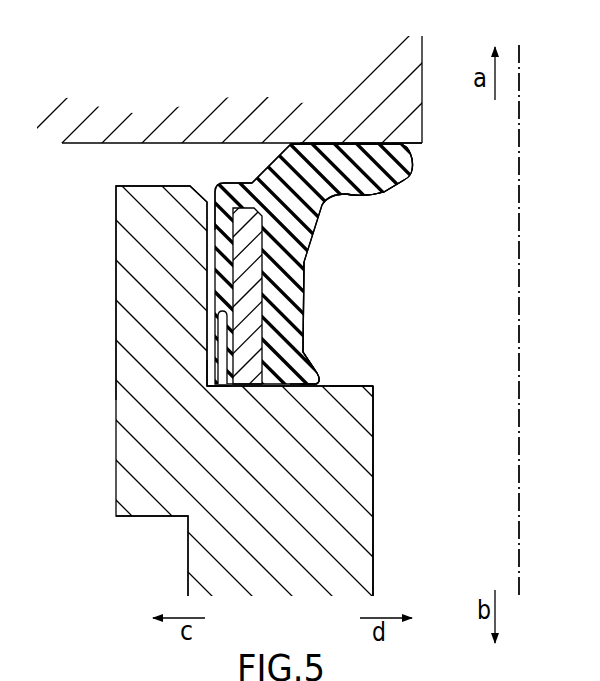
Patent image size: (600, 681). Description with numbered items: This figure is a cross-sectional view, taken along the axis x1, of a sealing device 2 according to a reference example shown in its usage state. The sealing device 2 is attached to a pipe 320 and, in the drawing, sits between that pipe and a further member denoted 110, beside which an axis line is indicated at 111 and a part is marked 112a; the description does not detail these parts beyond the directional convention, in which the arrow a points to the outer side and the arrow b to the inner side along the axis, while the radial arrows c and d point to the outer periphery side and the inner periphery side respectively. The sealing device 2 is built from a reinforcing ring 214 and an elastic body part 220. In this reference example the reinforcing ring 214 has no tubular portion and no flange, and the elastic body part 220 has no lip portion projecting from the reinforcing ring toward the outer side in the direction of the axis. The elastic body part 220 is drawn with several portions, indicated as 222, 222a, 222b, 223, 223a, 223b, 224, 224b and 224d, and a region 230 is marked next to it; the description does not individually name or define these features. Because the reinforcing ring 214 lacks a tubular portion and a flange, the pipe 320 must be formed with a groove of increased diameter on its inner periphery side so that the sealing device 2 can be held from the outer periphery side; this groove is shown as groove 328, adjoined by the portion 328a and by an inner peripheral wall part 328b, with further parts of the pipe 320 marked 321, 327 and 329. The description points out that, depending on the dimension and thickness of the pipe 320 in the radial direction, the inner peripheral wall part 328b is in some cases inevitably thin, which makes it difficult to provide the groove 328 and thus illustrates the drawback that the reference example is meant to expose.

The sealing device 2 is at (501, 212).
The first member (housing) 110 is at (437, 84).
The rotation axis 111 is at (532, 124).
The end surface of first member 112a is at (402, 152).
The reinforcing ring 214 is at (240, 289).
The elastic body part 220 is at (501, 367).
The lip portion 222 is at (410, 205).
The first surface of lip portion 222a is at (392, 170).
The second surface of lip portion 222b is at (316, 194).
The foot portion 223 is at (400, 322).
The bottom surface of foot portion 223a is at (321, 378).
The inclined surface of foot portion 223b is at (307, 360).
The seal body 224 is at (208, 253).
The outer peripheral surface of seal body 224b is at (303, 263).
The top surface of seal body 224d is at (212, 228).
The space 230 is at (484, 289).
The pipe 320 is at (390, 561).
The outer peripheral surface of second member 321 is at (458, 461).
The step surface 327 is at (188, 557).
The groove 328 is at (117, 280).
The support surface 328a is at (362, 386).
The inner peripheral wall part 328b is at (208, 362).
The side surface of second member 329 is at (374, 536).
The central axis x1 is at (521, 57).